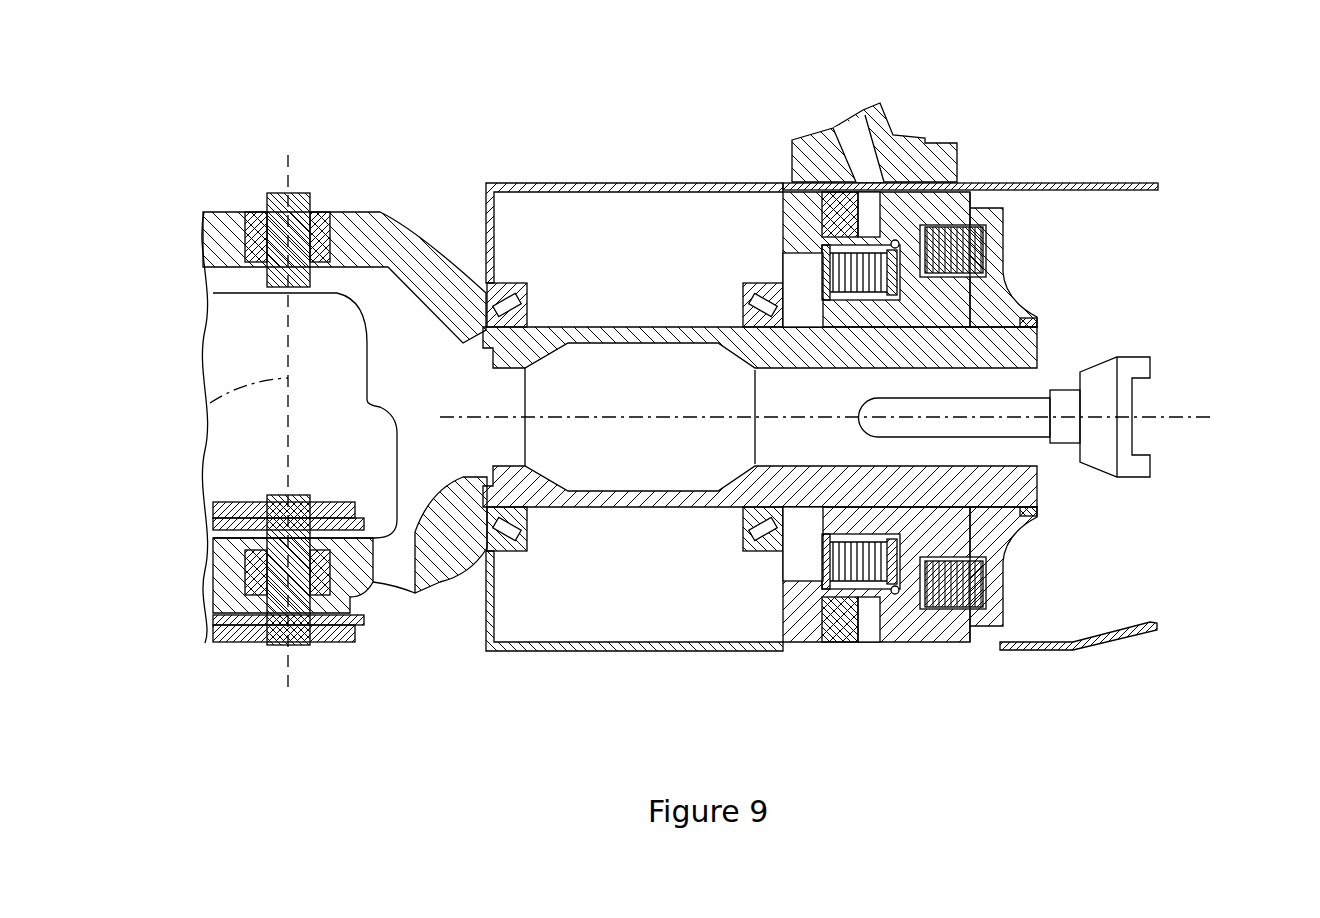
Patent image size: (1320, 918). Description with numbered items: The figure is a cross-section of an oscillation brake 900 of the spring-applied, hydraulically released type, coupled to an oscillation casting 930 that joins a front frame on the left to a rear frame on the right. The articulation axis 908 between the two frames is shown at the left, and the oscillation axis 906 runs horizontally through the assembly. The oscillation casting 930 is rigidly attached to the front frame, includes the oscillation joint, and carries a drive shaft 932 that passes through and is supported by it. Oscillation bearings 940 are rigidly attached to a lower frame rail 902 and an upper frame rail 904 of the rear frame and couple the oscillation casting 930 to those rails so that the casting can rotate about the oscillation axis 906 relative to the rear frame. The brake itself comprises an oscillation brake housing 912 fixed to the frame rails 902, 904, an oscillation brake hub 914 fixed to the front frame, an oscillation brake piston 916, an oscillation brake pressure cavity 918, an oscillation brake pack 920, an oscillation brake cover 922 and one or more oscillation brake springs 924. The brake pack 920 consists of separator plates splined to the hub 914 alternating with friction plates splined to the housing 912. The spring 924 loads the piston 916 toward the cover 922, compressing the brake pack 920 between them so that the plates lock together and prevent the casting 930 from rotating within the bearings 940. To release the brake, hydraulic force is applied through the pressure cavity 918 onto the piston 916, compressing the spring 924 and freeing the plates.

The oscillation brake 900 is at (1168, 254).
The lower frame rail 902 is at (1022, 652).
The upper frame rail 904 is at (1085, 183).
The oscillation axis 906 is at (1192, 425).
The articulation axis 908 is at (210, 403).
The oscillation brake housing 912 is at (790, 213).
The oscillation brake hub 914 is at (1018, 322).
The oscillation brake piston 916 is at (830, 203).
The oscillation brake pressure cavity 918 is at (849, 132).
The oscillation brake pack 920 is at (992, 240).
The oscillation brake cover 922 is at (1030, 278).
The oscillation brake spring 924 is at (830, 270).
The oscillation casting 930 is at (600, 385).
The drive shaft 932 is at (1130, 357).
The oscillation bearings 940 is at (755, 283).